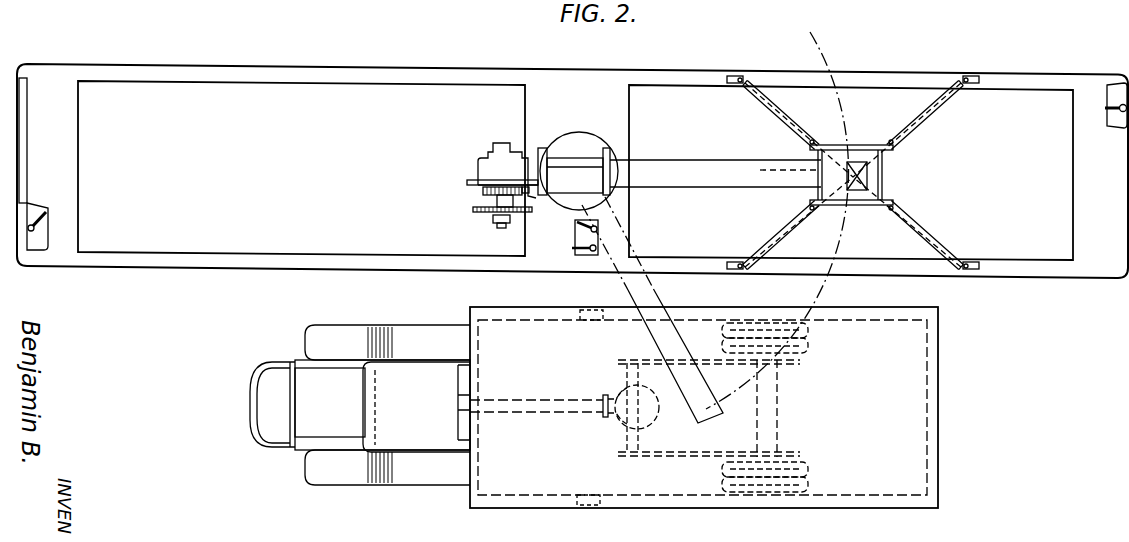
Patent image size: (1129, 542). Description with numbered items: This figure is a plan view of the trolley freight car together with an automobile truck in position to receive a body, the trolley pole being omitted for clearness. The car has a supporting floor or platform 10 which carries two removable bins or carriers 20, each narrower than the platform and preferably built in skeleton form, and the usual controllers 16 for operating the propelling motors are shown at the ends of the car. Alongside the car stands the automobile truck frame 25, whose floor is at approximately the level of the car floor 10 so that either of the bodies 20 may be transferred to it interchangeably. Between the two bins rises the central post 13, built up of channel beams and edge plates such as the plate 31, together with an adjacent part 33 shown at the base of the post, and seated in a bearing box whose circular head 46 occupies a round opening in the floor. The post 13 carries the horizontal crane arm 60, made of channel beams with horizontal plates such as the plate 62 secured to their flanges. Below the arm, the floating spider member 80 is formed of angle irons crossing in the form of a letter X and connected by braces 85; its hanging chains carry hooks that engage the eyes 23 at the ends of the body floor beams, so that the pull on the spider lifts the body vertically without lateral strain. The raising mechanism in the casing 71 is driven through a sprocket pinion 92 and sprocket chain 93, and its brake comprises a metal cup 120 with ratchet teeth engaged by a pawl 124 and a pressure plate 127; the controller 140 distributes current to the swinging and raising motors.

The supporting floor or platform 10 is at (273, 72).
The removable bins or carriers 20 is at (128, 82).
The controllers 16 is at (37, 212).
The eyes 23 is at (743, 76).
The floating spider member 80 is at (925, 129).
The braces 85 is at (855, 145).
The crane arm 60 is at (722, 160).
The horizontal plate 62 is at (789, 176).
The edge plate 31 is at (613, 171).
The drum 33 is at (558, 162).
The circular head 46 is at (575, 165).
The central post 13 is at (596, 150).
The sprocket pinion 92 is at (542, 148).
The casing 71 is at (508, 164).
The pawl 124 is at (506, 187).
The metal cup 120 is at (467, 183).
The sprocket chain 93 is at (473, 209).
The pressure plate 127 is at (536, 198).
The controller 140 is at (575, 242).
The automobile truck frame 25 is at (965, 361).